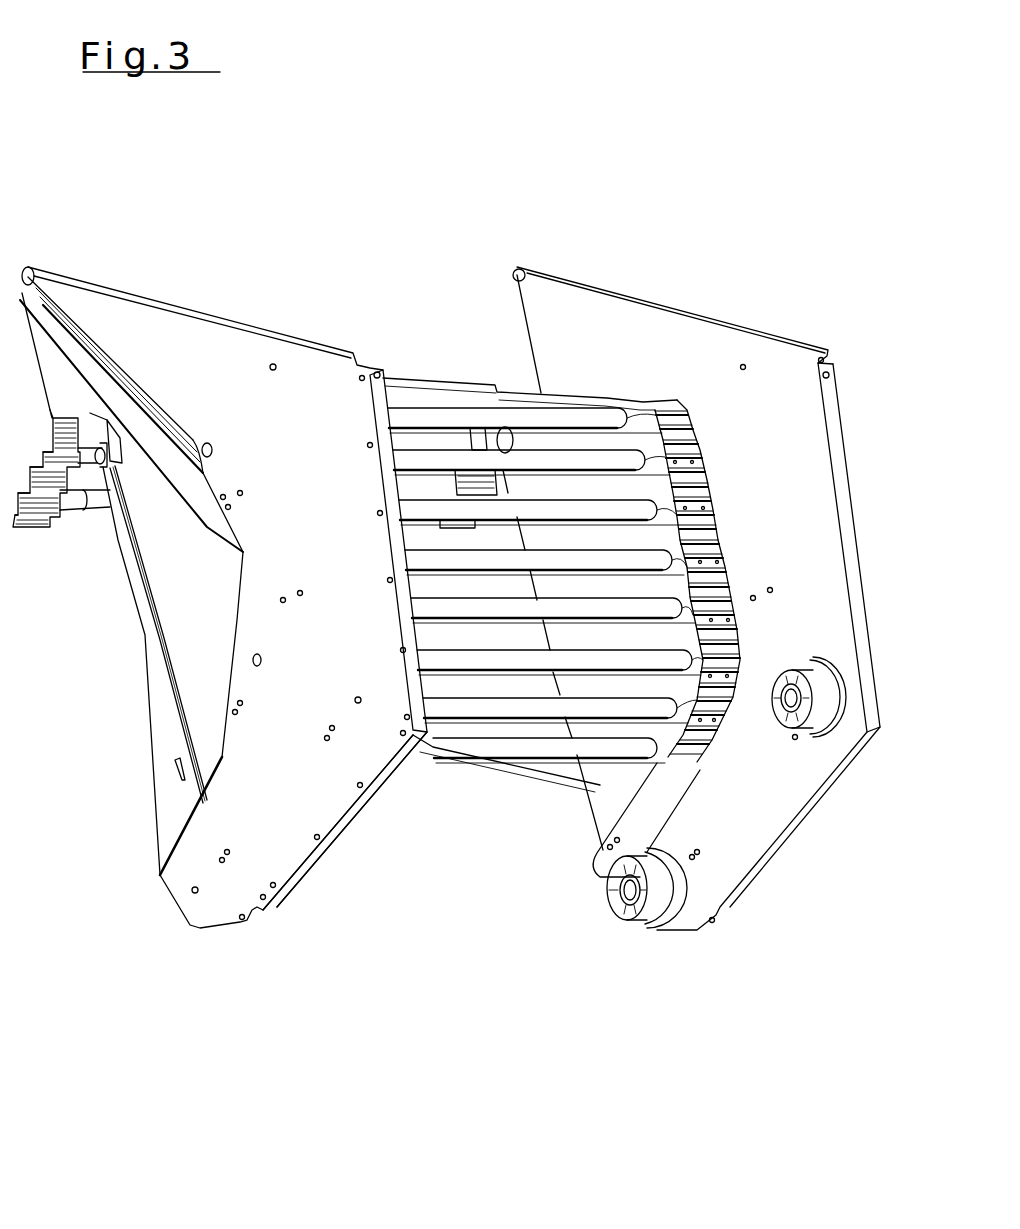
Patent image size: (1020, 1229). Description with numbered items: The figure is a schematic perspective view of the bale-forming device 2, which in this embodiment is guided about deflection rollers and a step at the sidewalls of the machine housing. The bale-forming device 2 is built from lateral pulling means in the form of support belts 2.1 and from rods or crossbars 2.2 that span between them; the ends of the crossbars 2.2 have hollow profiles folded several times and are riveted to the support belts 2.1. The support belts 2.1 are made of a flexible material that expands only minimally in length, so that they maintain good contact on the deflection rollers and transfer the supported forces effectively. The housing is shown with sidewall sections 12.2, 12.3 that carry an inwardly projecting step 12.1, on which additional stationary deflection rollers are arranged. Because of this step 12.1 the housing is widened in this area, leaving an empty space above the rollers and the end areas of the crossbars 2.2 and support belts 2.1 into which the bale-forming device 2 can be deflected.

The bale-forming device 2 is at (460, 808).
The support belts 2.1 is at (578, 765).
The crossbars 2.2 is at (440, 748).
The step 12.1 is at (688, 805).
The sidewall section 12.2 is at (627, 337).
The sidewall section 12.3 is at (597, 775).